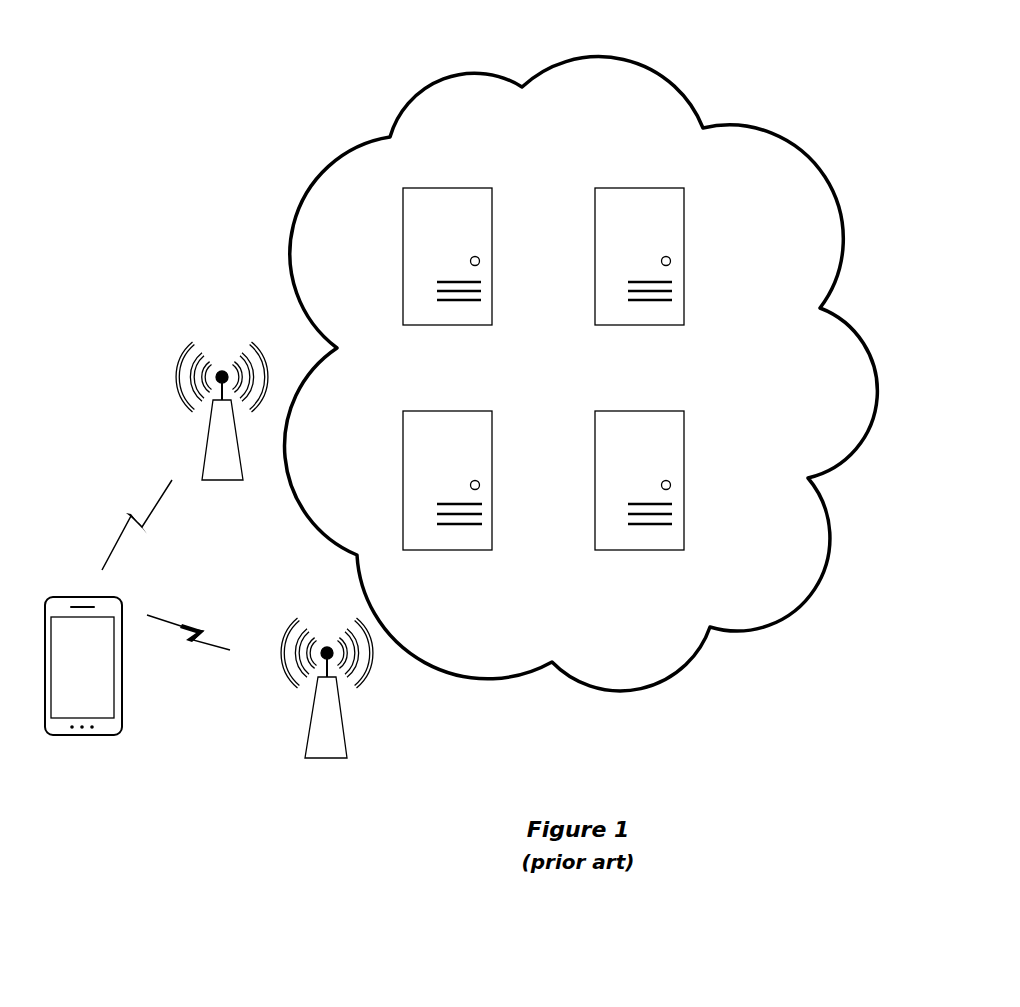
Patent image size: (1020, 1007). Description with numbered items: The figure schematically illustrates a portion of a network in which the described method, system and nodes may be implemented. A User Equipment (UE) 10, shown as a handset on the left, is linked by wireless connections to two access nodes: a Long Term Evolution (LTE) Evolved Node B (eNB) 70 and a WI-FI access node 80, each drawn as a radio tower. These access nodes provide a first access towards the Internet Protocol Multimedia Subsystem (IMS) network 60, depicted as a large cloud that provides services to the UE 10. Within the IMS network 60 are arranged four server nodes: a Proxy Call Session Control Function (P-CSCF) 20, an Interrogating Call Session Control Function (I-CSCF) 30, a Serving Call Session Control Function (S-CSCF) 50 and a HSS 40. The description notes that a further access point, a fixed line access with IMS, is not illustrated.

The User Equipment (UE) 10 is at (104, 597).
The Proxy Call Session Control Function (P-CSCF) 20 is at (468, 187).
The Interrogating Call Session Control Function (I-CSCF) 30 is at (468, 410).
The HSS 40 is at (660, 410).
The Serving Call Session Control Function (S-CSCF) 50 is at (660, 187).
The IP Multimedia Subsystem (IMS) network 60 is at (645, 65).
The Long Term Evolution (LTE) Evolved Node B (eNB) 70 is at (206, 447).
The WI-FI access node 80 is at (310, 728).